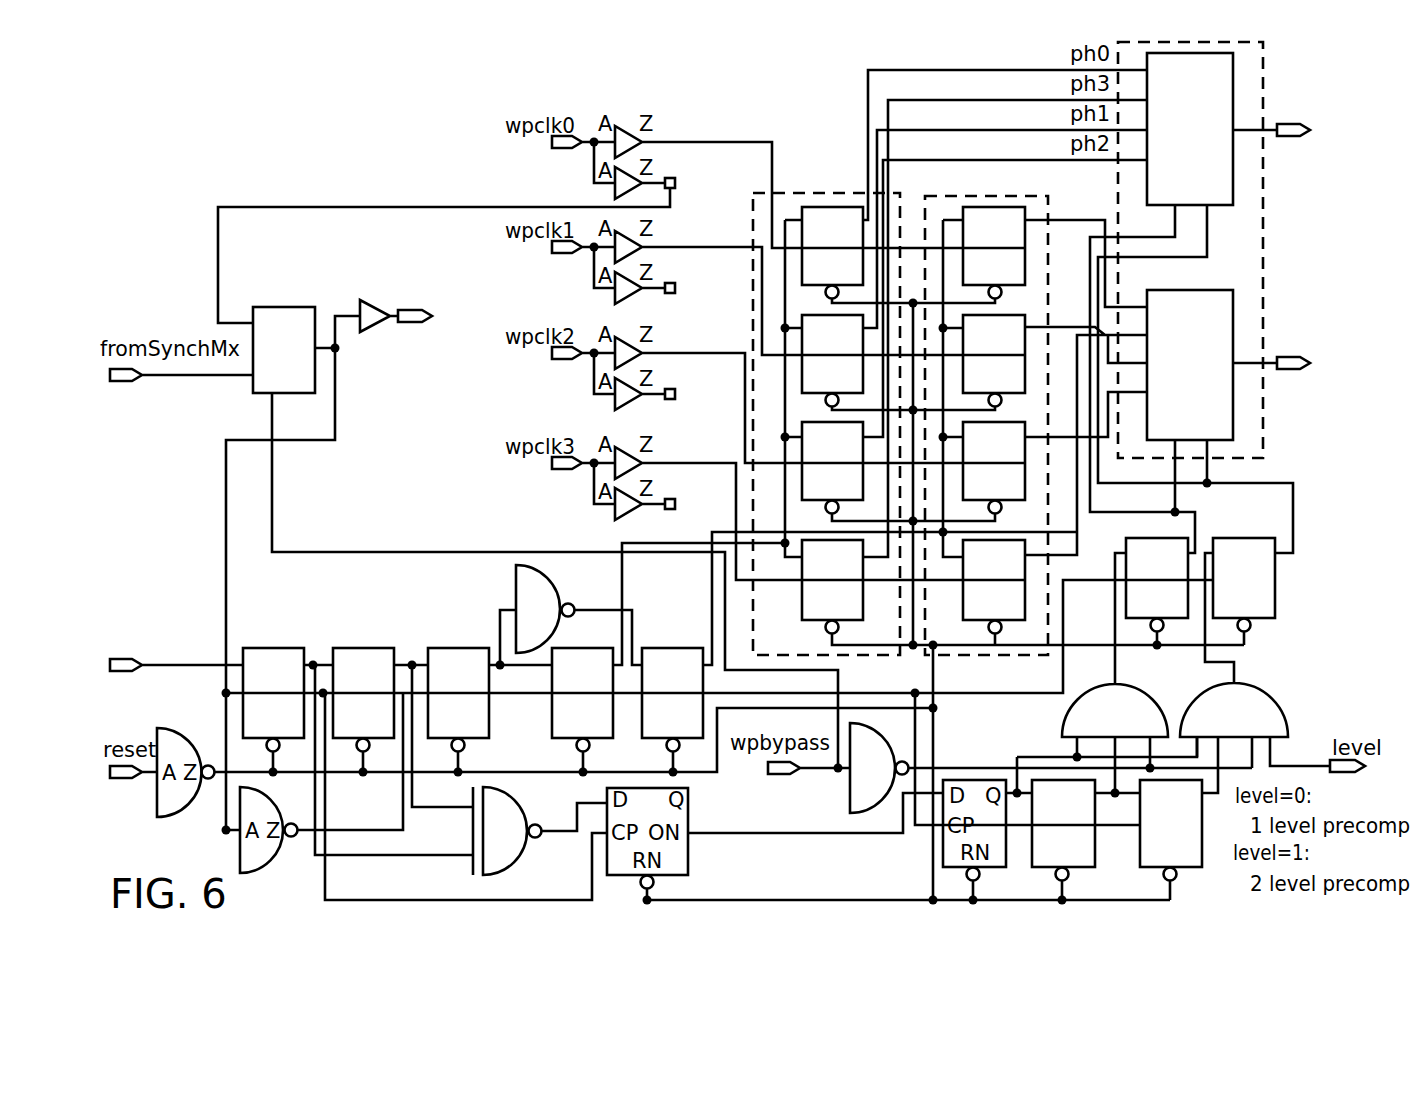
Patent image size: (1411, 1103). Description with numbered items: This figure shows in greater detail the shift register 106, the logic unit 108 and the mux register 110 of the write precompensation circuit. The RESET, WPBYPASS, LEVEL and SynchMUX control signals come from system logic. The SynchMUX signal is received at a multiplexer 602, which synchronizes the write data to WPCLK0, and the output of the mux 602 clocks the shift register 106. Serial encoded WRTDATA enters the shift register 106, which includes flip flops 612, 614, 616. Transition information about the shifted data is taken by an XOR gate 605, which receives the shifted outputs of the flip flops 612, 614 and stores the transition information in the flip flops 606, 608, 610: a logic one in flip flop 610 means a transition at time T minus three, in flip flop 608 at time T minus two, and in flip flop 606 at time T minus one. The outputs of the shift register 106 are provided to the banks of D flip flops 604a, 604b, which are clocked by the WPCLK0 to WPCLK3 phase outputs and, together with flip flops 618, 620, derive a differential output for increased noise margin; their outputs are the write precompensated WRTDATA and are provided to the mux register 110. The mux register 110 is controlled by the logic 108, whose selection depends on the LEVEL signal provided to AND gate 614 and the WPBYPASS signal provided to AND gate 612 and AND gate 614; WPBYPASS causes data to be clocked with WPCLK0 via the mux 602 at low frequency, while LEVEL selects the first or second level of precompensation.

The shift register 106 is at (659, 642).
The logic unit 108 is at (1298, 644).
The mux register 110 is at (1266, 72).
The multiplexer 602 is at (291, 307).
The bank of D flip flops 604a is at (843, 193).
The bank of D flip flops 604b is at (1002, 196).
The XOR gate 605 is at (515, 797).
The flip flop 606 is at (955, 766).
The flip flop 608 is at (1085, 870).
The flip flop 610 is at (1189, 871).
The flip flop / AND gate 612 is at (271, 648).
The flip flop / AND gate 614 is at (359, 648).
The flip flop 616 is at (456, 648).
The flip flop 618 is at (563, 650).
The flip flop 620 is at (657, 648).